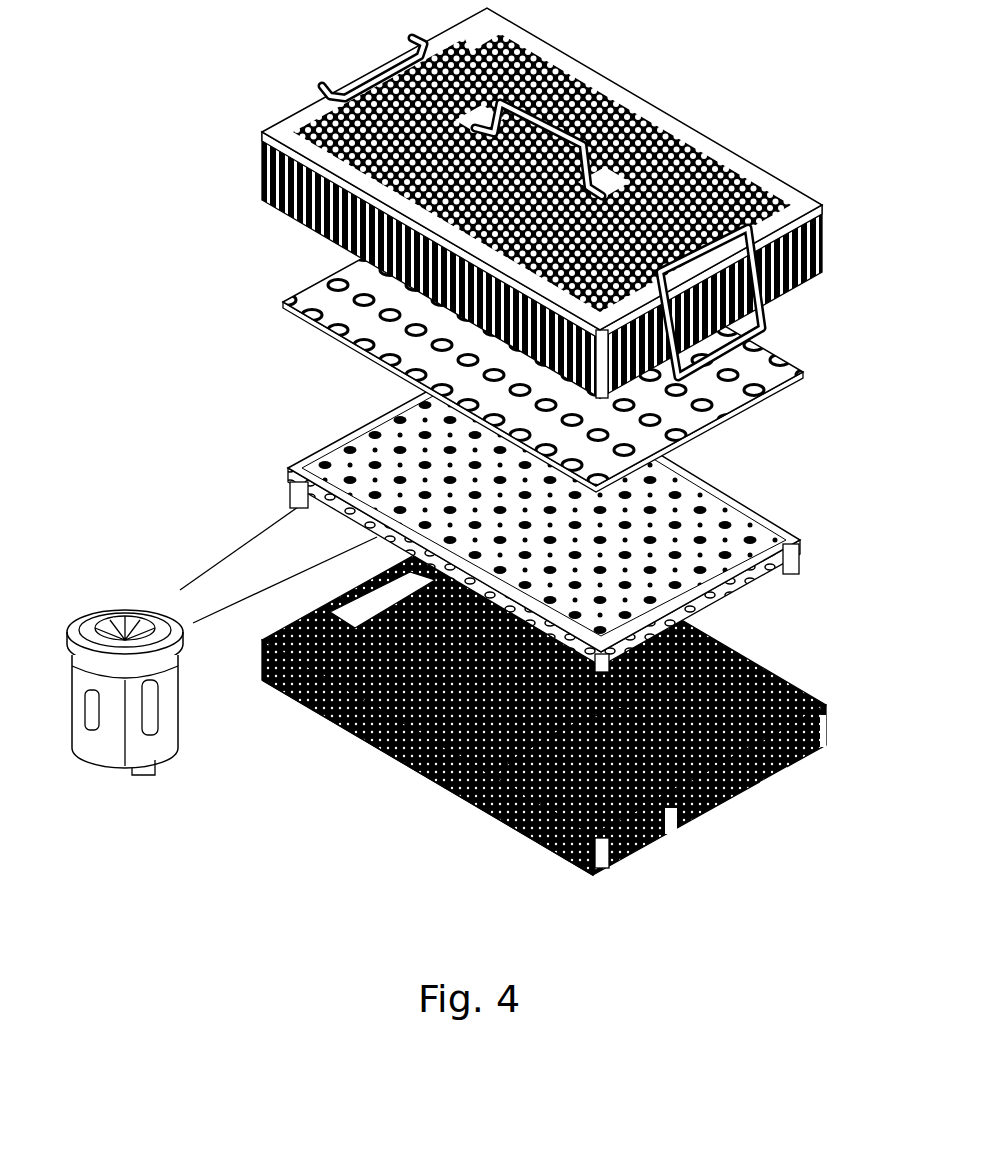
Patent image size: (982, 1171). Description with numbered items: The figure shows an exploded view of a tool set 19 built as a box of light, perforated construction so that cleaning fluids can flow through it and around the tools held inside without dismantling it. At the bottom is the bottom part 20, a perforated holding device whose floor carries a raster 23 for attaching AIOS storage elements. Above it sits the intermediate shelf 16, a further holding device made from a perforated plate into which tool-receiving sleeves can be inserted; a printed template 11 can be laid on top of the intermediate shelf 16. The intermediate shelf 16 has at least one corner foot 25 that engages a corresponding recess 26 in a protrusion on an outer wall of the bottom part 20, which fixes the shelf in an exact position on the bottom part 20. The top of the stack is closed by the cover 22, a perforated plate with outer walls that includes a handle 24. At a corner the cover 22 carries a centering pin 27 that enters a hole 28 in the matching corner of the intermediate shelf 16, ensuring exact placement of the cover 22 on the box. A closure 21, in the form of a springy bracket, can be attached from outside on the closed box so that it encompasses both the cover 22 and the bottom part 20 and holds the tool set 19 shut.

The tool set 19 is at (513, 199).
The cover 22 is at (727, 117).
The handle 24 is at (558, 108).
The closure 21 is at (778, 266).
The centering pin 27 is at (824, 292).
The printed template 11 is at (276, 309).
The intermediate shelf 16 is at (581, 513).
The hole 28 is at (798, 547).
The raster 23 is at (700, 712).
The bottom part 20 is at (557, 709).
The corner foot 25 is at (474, 792).
The recess 26 is at (588, 832).